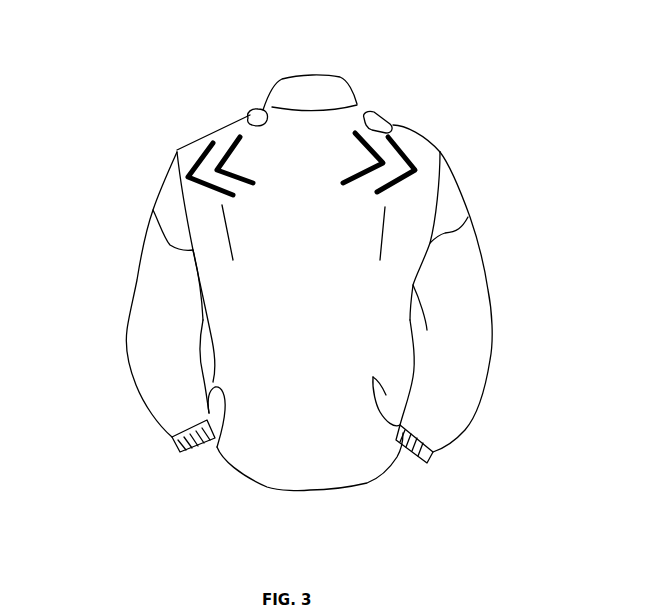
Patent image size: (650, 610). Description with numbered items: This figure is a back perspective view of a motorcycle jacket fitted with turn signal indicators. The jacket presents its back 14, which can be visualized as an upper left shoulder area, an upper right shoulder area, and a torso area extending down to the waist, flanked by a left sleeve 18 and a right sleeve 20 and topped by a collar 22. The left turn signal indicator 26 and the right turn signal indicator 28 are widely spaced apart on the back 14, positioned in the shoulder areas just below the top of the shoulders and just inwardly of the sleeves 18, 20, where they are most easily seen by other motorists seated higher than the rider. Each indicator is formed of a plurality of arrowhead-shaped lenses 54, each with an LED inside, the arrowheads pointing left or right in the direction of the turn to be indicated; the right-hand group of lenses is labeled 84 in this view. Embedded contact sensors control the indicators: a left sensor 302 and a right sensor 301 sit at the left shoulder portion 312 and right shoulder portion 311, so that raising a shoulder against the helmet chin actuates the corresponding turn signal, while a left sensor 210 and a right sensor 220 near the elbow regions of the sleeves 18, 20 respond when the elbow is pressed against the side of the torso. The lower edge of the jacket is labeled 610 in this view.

The back 14 is at (313, 344).
The left sleeve 18 is at (150, 302).
The right sleeve 20 is at (487, 277).
The collar 22 is at (317, 83).
The left turn signal indicator 26 is at (235, 242).
The right turn signal indicator 28 is at (380, 244).
The arrowhead-shaped lens 54 is at (250, 185).
The right reflective chevron indicia 84 is at (345, 182).
The left sensor 210 is at (210, 440).
The right sensor 220 is at (397, 423).
The right sensor 301 is at (383, 112).
The left sensor 302 is at (258, 110).
The right shoulder portion 311 is at (440, 152).
The left shoulder portion 312 is at (177, 152).
The hem 610 is at (312, 468).